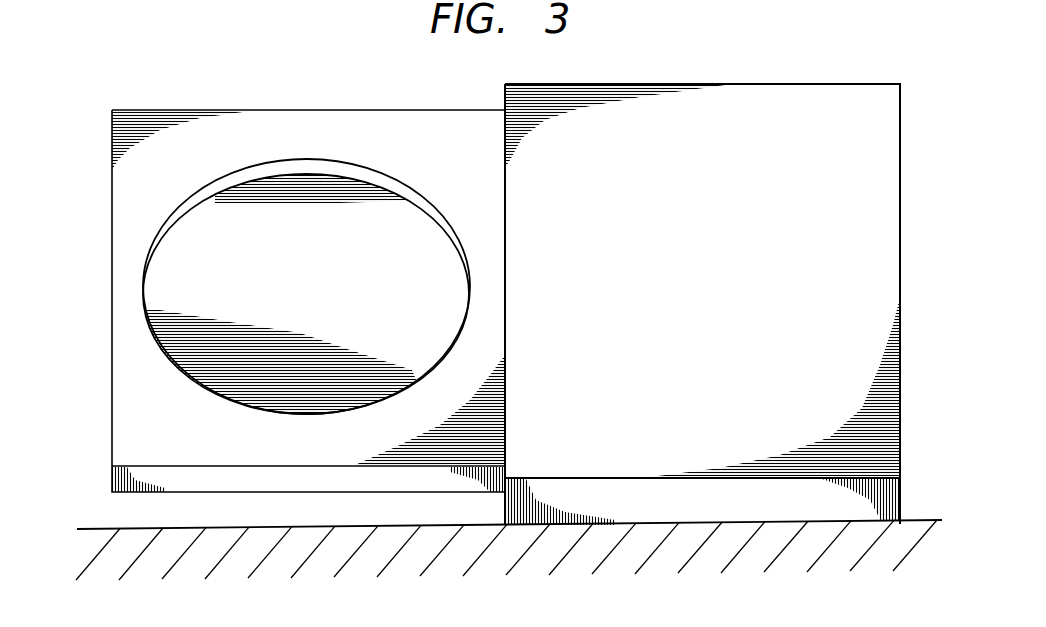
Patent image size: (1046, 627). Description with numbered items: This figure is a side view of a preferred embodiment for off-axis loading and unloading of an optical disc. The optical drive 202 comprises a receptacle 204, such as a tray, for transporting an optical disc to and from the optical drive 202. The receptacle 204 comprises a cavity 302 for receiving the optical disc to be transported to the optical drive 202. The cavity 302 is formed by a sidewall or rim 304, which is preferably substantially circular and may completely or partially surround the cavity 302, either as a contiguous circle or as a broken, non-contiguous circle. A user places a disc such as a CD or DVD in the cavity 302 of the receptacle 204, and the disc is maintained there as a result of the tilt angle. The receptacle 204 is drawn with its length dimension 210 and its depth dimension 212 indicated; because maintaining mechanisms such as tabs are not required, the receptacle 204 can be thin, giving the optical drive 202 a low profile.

The optical drive 202 is at (723, 287).
The receptacle 204 is at (293, 128).
The length dimension 210 is at (105, 111).
The depth dimension 212 is at (112, 500).
The cavity 302 is at (289, 266).
The rim 304 is at (419, 368).